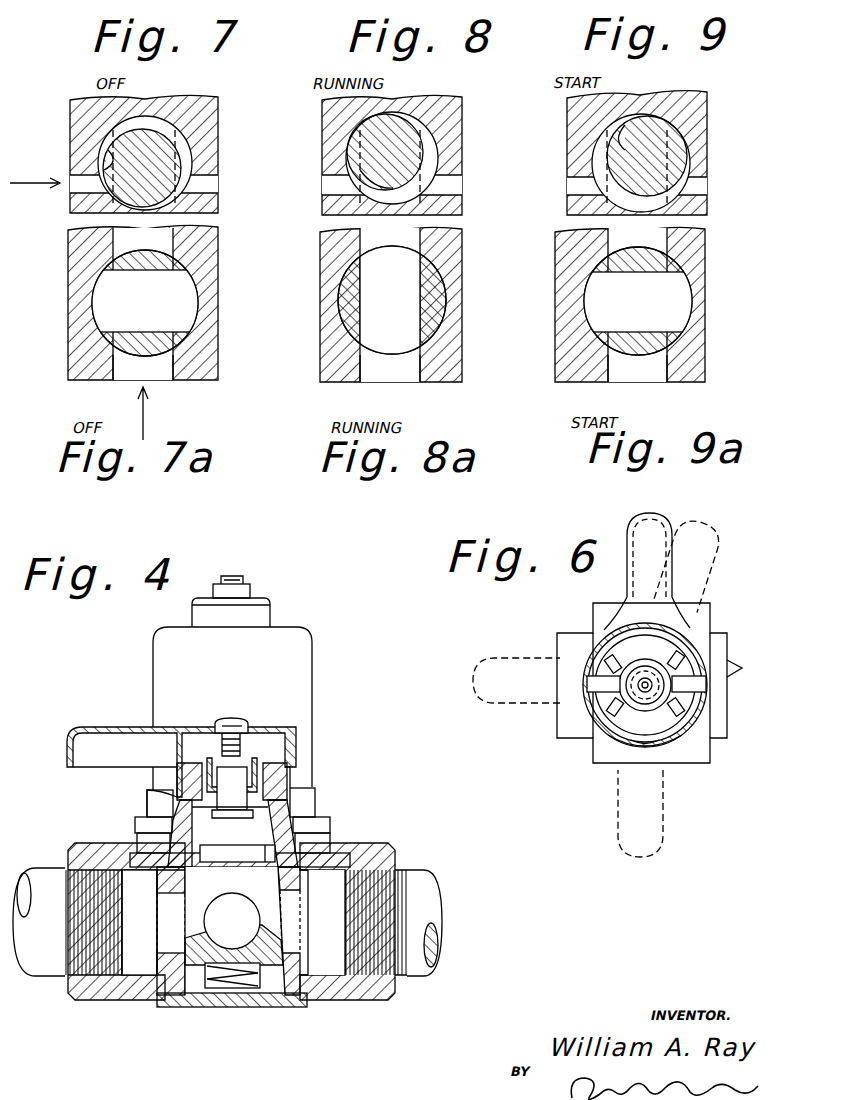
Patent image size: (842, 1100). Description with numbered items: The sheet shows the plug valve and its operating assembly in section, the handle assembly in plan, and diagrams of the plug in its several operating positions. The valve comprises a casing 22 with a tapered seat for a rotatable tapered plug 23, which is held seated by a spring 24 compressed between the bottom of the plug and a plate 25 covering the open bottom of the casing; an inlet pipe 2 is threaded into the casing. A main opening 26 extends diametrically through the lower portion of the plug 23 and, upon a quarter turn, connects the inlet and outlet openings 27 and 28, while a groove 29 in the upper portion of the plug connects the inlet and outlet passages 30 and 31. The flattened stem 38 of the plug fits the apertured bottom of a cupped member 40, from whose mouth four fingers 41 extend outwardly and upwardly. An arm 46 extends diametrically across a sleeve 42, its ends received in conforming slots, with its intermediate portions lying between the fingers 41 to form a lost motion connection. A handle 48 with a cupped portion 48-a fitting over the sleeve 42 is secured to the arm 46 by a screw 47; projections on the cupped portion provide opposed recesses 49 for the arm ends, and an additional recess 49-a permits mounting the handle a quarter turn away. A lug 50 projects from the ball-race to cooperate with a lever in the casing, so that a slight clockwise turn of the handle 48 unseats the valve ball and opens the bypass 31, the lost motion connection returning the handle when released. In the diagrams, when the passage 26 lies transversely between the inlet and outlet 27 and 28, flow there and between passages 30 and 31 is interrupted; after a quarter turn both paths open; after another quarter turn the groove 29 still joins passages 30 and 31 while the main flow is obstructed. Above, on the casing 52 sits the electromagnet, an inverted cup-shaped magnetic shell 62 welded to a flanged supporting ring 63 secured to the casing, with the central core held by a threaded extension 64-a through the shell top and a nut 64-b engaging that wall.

In FIG. 4, the pipe 2 is at (428, 976).
In FIG. 7a, the casing 22 is at (68, 258).
In FIG. 8a, the casing 22 is at (332, 258).
In FIG. 9a, the casing 22 is at (567, 258).
In FIG. 4, the casing 22 is at (80, 1000).
In FIG. 7, the tapered plug 23 is at (170, 158).
In FIG. 7a, the tapered plug 23 is at (131, 352).
In FIG. 8, the tapered plug 23 is at (415, 158).
In FIG. 8a, the tapered plug 23 is at (440, 298).
In FIG. 9, the tapered plug 23 is at (690, 135).
In FIG. 9a, the tapered plug 23 is at (634, 355).
In FIG. 4, the tapered plug 23 is at (187, 985).
In FIG. 4, the spring 24 is at (240, 990).
In FIG. 4, the plate 25 is at (288, 1007).
In FIG. 7a, the main opening 26 is at (165, 332).
In FIG. 8a, the main opening 26 is at (361, 312).
In FIG. 9a, the main opening 26 is at (659, 332).
In FIG. 4, the main opening 26 is at (206, 905).
In FIG. 7a, the inlet opening 27 is at (160, 372).
In FIG. 8a, the inlet opening 27 is at (398, 376).
In FIG. 9a, the inlet opening 27 is at (650, 372).
In FIG. 4, the inlet opening 27 is at (304, 921).
In FIG. 7a, the outlet opening 28 is at (143, 304).
In FIG. 8a, the outlet opening 28 is at (390, 305).
In FIG. 9a, the outlet opening 28 is at (637, 305).
In FIG. 4, the outlet opening 28 is at (160, 921).
In FIG. 7, the groove 29 is at (185, 140).
In FIG. 8, the groove 29 is at (430, 138).
In FIG. 9, the groove 29 is at (680, 178).
In FIG. 4, the groove 29 is at (226, 862).
In FIG. 7, the inlet passage 30 is at (70, 187).
In FIG. 8, the inlet passage 30 is at (324, 187).
In FIG. 9, the inlet passage 30 is at (568, 187).
In FIG. 7, the outlet passage 31 is at (208, 186).
In FIG. 8, the outlet passage 31 is at (458, 188).
In FIG. 9, the outlet passage 31 is at (703, 188).
In FIG. 4, the flattened stem 38 is at (219, 816).
In FIG. 6, the flattened stem 38 is at (655, 670).
In FIG. 4, the cupped member 40 is at (216, 776).
In FIG. 6, the cupped member 40 is at (607, 642).
In FIG. 6, the fingers 41 is at (610, 665).
In FIG. 4, the sleeve 42 is at (177, 753).
In FIG. 6, the arm 46 is at (590, 684).
In FIG. 4, the screw 47 is at (238, 719).
In FIG. 4, the handle 48 is at (124, 727).
In FIG. 6, the handle 48 is at (652, 513).
In FIG. 6, the cupped portion 48-a is at (596, 725).
In FIG. 6, the recesses 49 is at (600, 693).
In FIG. 6, the additional recess 49-a is at (645, 748).
In FIG. 6, the lug 50 is at (740, 668).
In FIG. 4, the casing 52 is at (330, 840).
In FIG. 4, the magnetic shell 62 is at (312, 692).
In FIG. 4, the flanged supporting ring 63 is at (318, 812).
In FIG. 4, the threaded extension 64-a is at (236, 578).
In FIG. 4, the nut 64-b is at (270, 600).